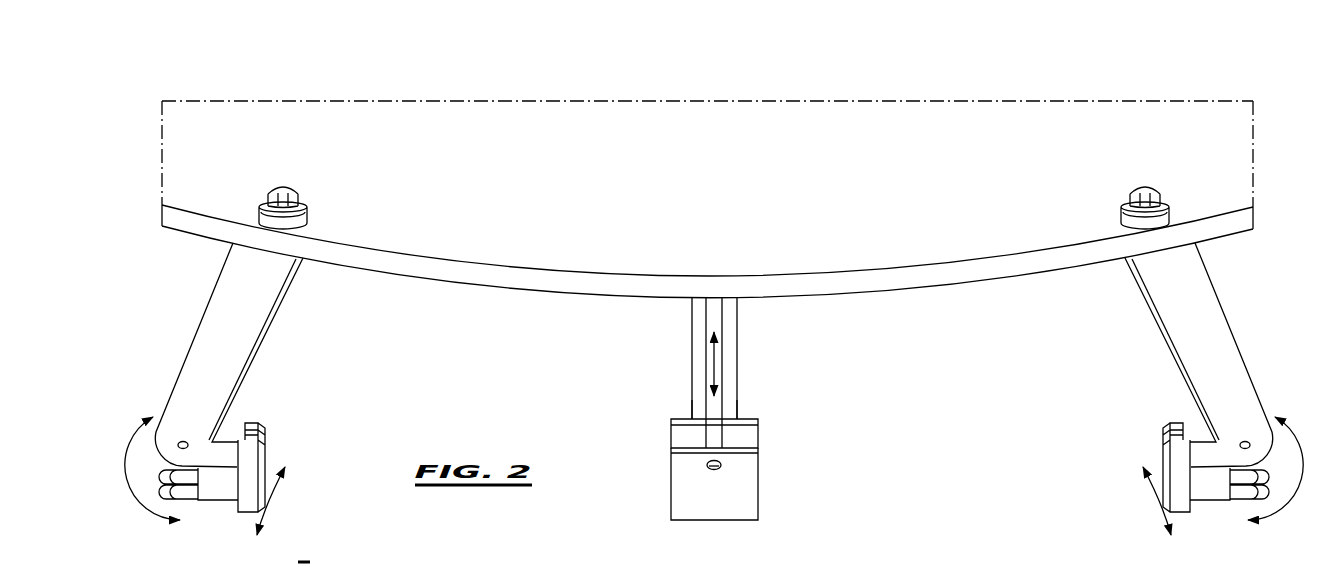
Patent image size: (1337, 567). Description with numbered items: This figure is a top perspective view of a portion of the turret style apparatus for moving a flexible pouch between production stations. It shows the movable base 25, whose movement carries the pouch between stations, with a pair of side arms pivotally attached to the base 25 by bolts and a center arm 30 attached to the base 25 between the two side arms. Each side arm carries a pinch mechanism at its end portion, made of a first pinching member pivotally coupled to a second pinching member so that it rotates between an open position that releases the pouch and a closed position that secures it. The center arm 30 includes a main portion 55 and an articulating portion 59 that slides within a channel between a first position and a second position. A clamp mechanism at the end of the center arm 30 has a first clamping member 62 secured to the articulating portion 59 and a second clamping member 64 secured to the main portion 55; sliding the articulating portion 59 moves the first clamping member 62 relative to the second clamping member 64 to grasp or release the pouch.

The movable base 25 is at (699, 190).
The center arm 30 is at (709, 419).
The main portion 55 is at (733, 362).
The articulating portion 59 is at (715, 313).
The first clamping member 62 is at (743, 492).
The second clamping member 64 is at (743, 438).